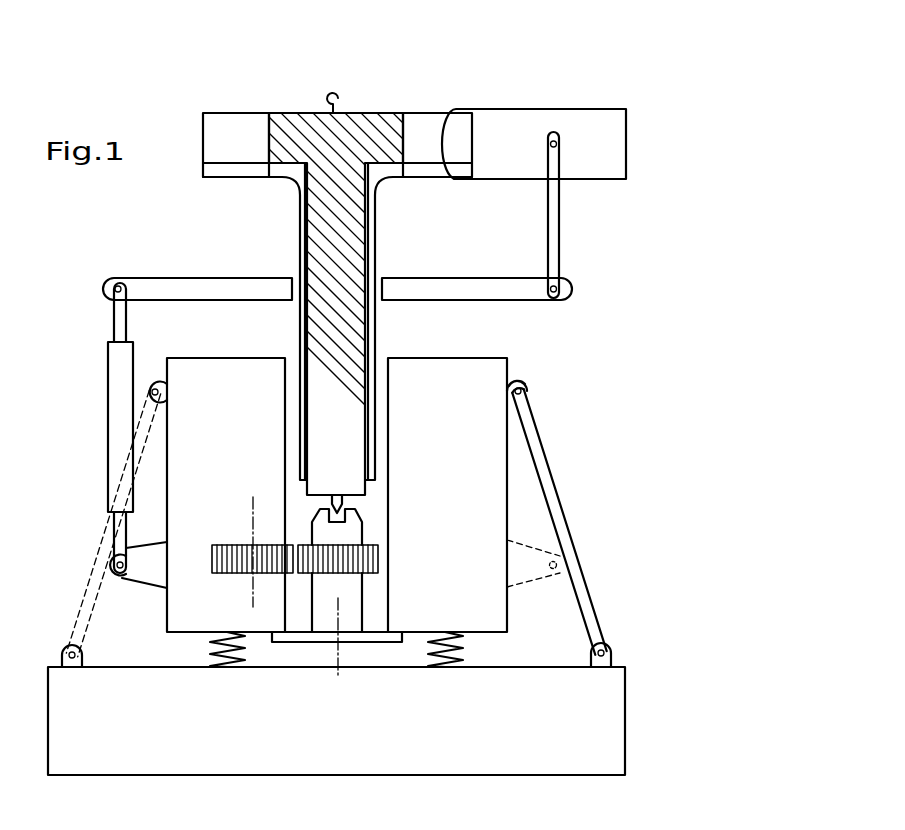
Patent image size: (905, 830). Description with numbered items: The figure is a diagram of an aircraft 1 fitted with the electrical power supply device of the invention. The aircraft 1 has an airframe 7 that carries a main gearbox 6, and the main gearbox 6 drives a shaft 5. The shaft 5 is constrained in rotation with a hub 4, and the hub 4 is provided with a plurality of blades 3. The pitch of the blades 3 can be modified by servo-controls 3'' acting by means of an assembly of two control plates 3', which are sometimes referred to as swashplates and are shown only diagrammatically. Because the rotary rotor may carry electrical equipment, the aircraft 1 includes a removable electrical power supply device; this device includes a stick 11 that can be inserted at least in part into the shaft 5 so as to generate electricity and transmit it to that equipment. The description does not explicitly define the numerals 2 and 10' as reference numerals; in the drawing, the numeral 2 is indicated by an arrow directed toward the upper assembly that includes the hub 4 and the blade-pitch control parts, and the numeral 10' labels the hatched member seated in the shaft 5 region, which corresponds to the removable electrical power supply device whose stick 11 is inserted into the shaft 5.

The aircraft 1 is at (674, 240).
The tool holder assembly 2 is at (650, 86).
The blades 3 is at (533, 216).
The control plates 3' is at (170, 275).
The servo-controls 3'' is at (90, 429).
The hub 4 is at (427, 118).
The shaft 5 is at (418, 173).
The main gearbox 6 is at (487, 358).
The airframe 7 is at (561, 732).
The bending punch 10' is at (458, 306).
The stick 11 is at (401, 98).